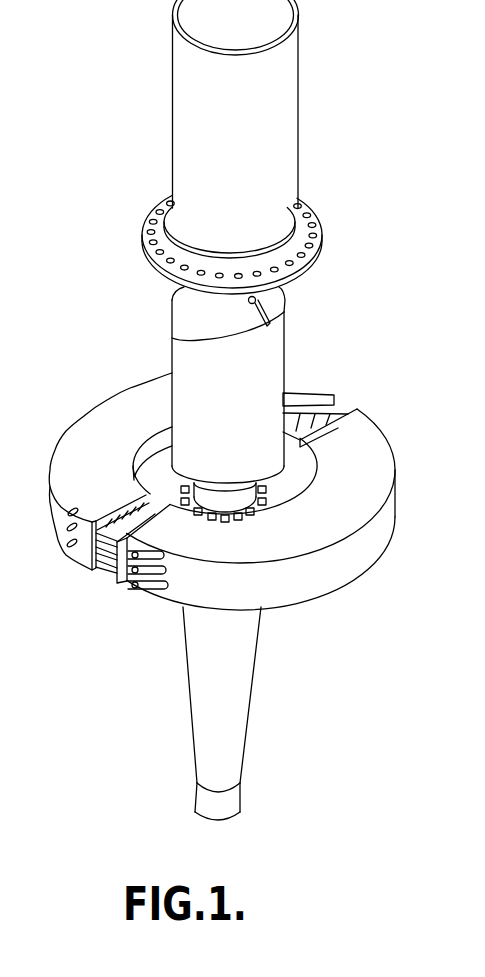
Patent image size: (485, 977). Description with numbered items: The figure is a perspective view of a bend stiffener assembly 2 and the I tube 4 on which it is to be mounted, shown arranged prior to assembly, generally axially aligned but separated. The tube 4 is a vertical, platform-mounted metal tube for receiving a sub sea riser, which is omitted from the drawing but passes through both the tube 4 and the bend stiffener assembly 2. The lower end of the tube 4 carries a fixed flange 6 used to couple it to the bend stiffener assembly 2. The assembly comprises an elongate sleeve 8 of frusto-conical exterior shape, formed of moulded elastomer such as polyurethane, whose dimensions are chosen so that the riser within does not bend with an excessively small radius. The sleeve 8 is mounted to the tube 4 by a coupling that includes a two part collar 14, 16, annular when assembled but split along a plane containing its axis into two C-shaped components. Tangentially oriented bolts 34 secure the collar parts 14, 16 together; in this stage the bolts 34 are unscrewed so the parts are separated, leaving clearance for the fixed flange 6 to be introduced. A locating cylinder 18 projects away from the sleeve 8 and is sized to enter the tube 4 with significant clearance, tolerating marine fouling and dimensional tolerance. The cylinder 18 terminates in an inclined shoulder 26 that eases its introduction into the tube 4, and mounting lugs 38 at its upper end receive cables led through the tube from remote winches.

The bend stiffener assembly 2 is at (283, 620).
The tube 4 is at (305, 147).
The fixed flange 6 is at (321, 250).
The elongate sleeve 8 is at (198, 650).
The collar part 14 is at (64, 437).
The collar part 16 is at (393, 477).
The locating cylinder 18 is at (271, 402).
The inclined shoulder 26 is at (286, 308).
The bolts 34 is at (126, 584).
The mounting lugs 38 is at (174, 339).